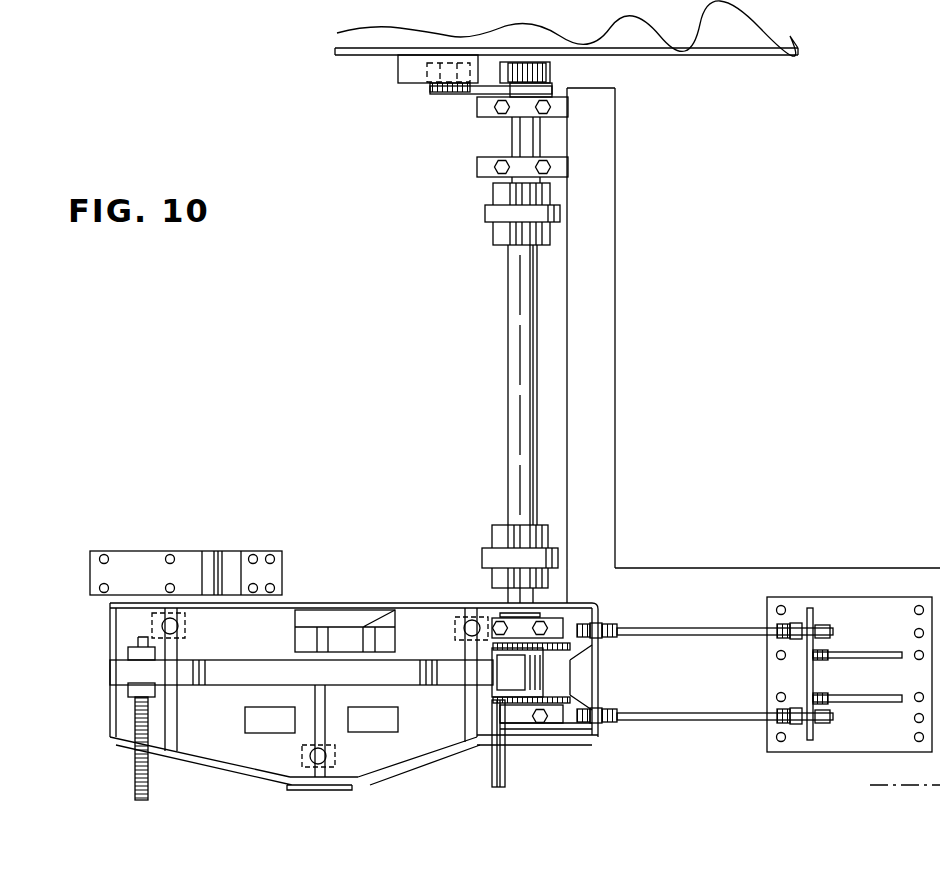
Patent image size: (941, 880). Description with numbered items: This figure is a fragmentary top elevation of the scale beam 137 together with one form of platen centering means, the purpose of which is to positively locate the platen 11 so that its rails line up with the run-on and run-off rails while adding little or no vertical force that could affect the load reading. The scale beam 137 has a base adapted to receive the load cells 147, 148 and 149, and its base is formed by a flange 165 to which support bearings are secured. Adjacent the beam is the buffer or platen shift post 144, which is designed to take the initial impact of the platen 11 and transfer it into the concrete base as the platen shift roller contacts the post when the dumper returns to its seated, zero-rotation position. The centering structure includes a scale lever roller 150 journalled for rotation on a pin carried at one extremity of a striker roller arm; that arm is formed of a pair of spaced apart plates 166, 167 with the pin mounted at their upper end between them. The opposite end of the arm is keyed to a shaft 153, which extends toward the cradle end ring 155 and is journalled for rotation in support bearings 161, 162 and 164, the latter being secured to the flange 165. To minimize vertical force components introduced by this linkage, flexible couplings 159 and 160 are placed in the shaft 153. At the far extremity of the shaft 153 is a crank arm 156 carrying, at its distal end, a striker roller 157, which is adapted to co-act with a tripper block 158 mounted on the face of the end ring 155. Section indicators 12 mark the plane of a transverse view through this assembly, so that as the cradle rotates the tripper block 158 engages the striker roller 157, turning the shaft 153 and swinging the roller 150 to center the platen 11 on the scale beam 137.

The platen 11 is at (125, 782).
The section line 12- 12 is at (568, 40).
The scale beam 137 is at (442, 678).
The platen shift post 144 is at (270, 552).
The load cell 147 is at (186, 630).
The load cell 148 is at (337, 755).
The load cell 149 is at (453, 628).
The scale lever roller 150 is at (560, 668).
The shaft 153 is at (508, 367).
The cradle end ring 155 is at (705, 57).
The crank arm 156 is at (470, 88).
The striker roller 157 is at (427, 87).
The tripper block 158 is at (402, 70).
The flexible coupling 159 is at (485, 211).
The flexible coupling 160 is at (482, 558).
The support bearing 161 is at (560, 107).
The support bearing 162 is at (580, 165).
The support bearing 164 is at (558, 725).
The flange 165 is at (423, 748).
The plate 166 is at (567, 663).
The plate 167 is at (580, 687).